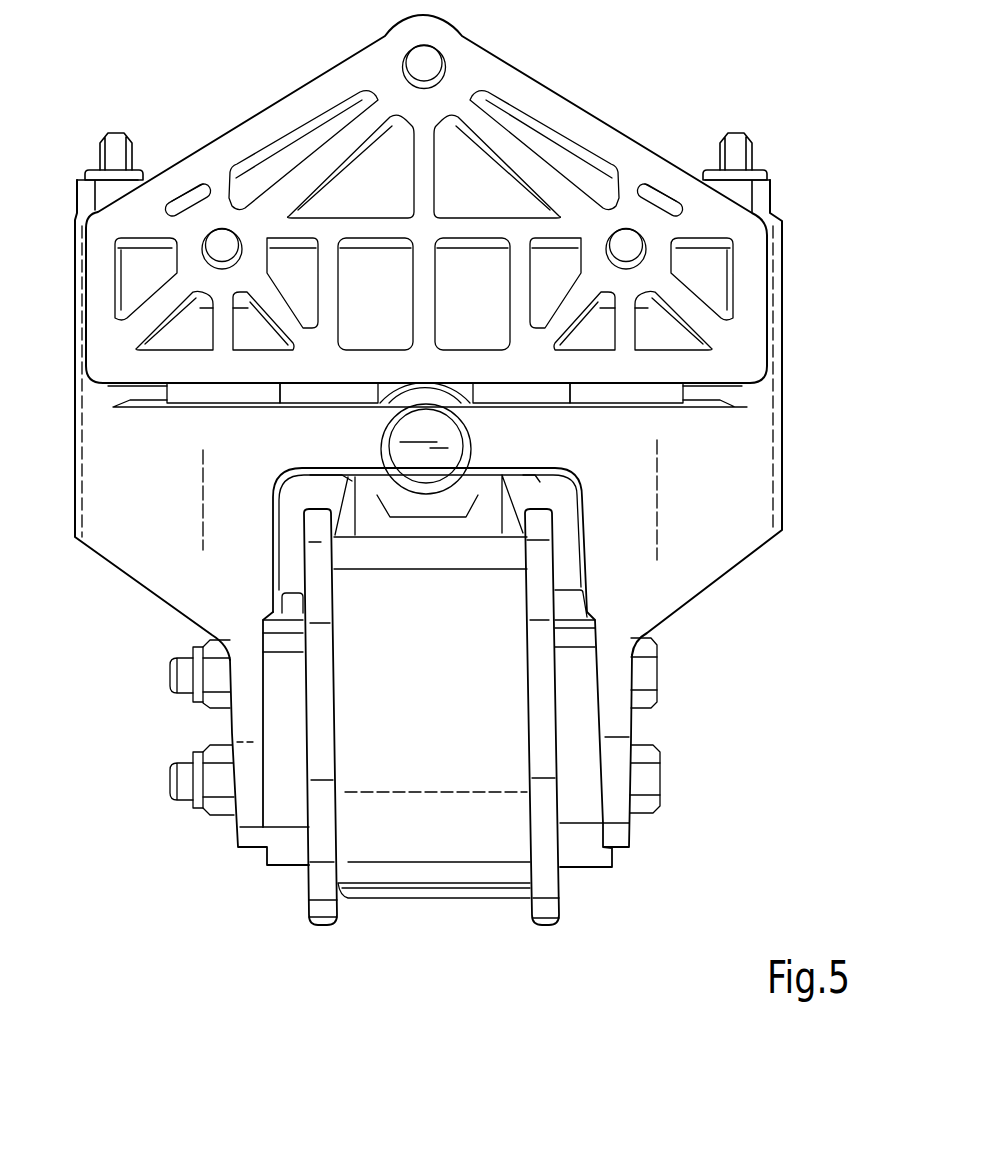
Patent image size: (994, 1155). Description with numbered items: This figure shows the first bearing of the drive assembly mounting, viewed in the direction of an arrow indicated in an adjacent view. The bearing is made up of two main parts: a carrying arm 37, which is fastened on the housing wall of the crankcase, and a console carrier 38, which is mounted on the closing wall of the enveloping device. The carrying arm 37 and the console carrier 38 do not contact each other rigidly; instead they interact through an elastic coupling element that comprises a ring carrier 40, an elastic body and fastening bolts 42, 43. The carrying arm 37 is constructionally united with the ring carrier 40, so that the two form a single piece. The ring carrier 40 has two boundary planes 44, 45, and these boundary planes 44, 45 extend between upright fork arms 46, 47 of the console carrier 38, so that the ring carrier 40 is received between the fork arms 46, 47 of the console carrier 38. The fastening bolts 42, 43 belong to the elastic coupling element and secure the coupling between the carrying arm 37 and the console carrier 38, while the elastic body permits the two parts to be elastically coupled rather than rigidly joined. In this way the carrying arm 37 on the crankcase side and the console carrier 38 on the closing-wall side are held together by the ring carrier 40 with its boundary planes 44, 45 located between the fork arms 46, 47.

The carrying arm 37 is at (310, 933).
The console carrier 38 is at (762, 462).
The ring carrier 40 is at (560, 903).
The fastening bolt 42 is at (643, 777).
The fastening bolt 43 is at (638, 672).
The boundary plane 44 is at (552, 558).
The boundary plane 45 is at (310, 900).
The fork arm 46 is at (618, 828).
The fork arm 47 is at (248, 813).